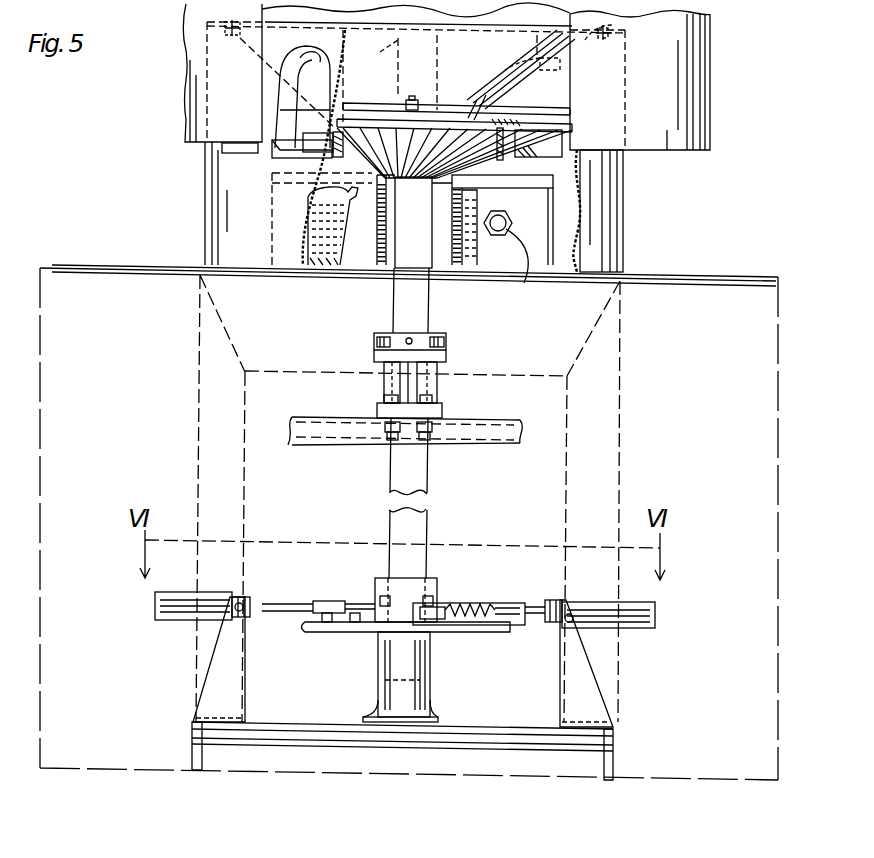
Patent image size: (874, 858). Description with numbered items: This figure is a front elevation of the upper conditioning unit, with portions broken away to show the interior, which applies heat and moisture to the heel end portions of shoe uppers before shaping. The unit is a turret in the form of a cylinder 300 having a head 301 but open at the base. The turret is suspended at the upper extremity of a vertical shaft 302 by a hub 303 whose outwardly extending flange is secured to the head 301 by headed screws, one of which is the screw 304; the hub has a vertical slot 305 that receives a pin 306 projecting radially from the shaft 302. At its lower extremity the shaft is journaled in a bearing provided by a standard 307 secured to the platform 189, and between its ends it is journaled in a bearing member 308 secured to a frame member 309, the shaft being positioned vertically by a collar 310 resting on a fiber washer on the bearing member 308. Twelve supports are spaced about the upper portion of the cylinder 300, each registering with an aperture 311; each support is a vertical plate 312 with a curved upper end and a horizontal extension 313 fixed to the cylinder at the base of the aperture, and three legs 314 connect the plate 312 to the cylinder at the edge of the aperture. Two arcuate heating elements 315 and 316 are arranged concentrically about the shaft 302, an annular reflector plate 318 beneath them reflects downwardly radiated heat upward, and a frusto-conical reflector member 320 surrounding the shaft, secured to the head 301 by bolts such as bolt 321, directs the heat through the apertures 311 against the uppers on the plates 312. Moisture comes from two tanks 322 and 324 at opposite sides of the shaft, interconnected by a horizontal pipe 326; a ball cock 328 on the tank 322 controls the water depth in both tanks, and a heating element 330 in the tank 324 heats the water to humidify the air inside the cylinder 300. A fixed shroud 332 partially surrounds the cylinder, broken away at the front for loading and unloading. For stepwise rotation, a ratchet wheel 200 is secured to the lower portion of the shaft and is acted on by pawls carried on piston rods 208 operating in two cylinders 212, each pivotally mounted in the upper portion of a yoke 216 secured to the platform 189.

The platform 189 is at (291, 722).
The ratchet wheel 200 is at (480, 634).
The piston rod 208 is at (292, 606).
The cylinder 212 is at (155, 606).
The yoke 216 is at (212, 692).
The cylinder 300 is at (610, 191).
The head 301 is at (292, 12).
The vertical shaft 302 is at (427, 280).
The hub 303 is at (386, 95).
The headed screw 304 is at (495, 50).
The vertical slot 305 is at (454, 198).
The pin 306 is at (436, 78).
The standard 307 is at (430, 702).
The bearing member 308 is at (383, 386).
The frame member 309 is at (514, 433).
The collar 310 is at (444, 337).
The aperture 311 is at (278, 58).
The vertical plate 312 is at (302, 96).
The horizontal extension 313 is at (290, 148).
The leg 314 is at (292, 66).
The arcuate heating element 315 is at (404, 108).
The arcuate heating element 316 is at (488, 90).
The annular reflector plate 318 is at (505, 132).
The frusto-conical reflector member 320 is at (498, 40).
The bolt 321 is at (612, 30).
The tank 322 is at (350, 264).
The tank 324 is at (530, 262).
The horizontal pipe 326 is at (456, 232).
The ball cock 328 is at (322, 188).
The heating element 330 is at (518, 268).
The fixed shroud 332 is at (192, 42).